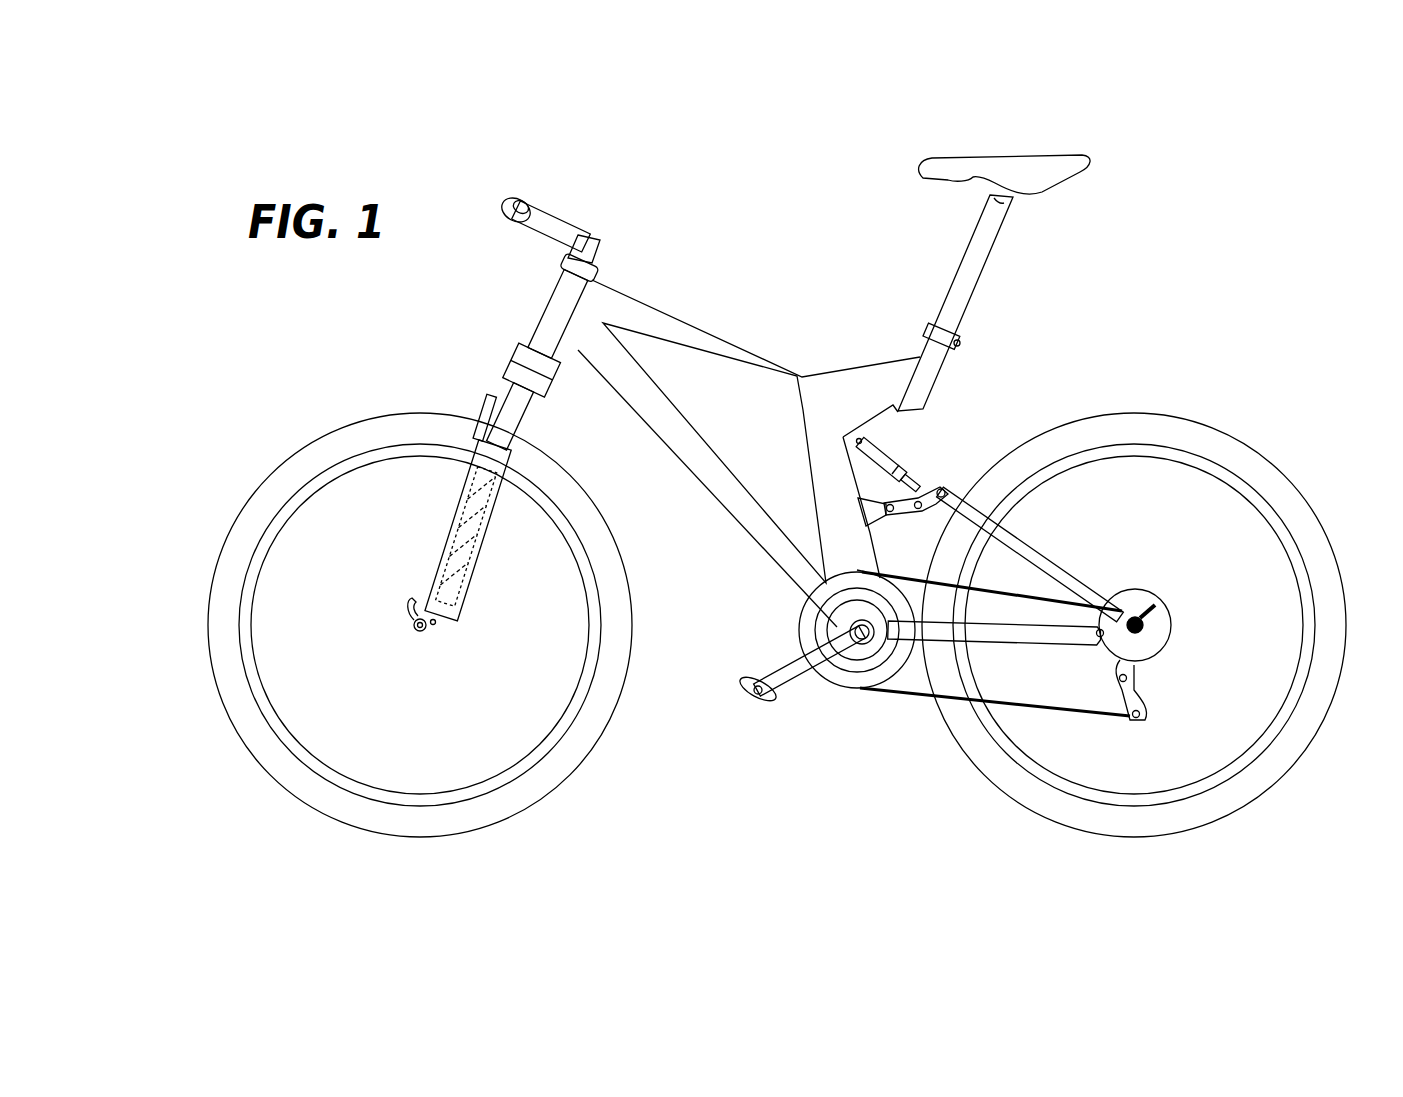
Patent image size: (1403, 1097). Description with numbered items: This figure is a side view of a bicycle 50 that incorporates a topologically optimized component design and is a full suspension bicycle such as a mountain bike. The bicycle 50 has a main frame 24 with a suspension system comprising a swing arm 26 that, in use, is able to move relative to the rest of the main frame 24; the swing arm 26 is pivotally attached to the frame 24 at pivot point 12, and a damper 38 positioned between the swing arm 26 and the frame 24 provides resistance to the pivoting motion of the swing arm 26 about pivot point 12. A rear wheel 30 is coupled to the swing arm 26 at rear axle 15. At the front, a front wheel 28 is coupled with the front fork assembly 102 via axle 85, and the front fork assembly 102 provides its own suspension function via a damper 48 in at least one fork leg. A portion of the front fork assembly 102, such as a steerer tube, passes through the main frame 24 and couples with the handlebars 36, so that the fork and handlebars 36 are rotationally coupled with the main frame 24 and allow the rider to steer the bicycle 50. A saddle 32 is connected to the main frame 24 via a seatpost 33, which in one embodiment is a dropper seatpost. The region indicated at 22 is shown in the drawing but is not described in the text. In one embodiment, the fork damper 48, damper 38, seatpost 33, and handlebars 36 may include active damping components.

The bicycle 50 is at (814, 104).
The pivot point 12 is at (856, 638).
The rear axle 15 is at (1146, 632).
The frame 22 is at (1172, 274).
The main frame 24 is at (730, 332).
The swing arm 26 is at (1021, 540).
The front wheel 28 is at (330, 432).
The rear wheel 30 is at (1290, 484).
The saddle 32 is at (1017, 157).
The seatpost 33 is at (982, 274).
The handlebars 36 is at (515, 198).
The damper 38 is at (906, 470).
The damper 48 is at (440, 556).
The axle 85 is at (418, 634).
The front fork assembly 102 is at (518, 370).